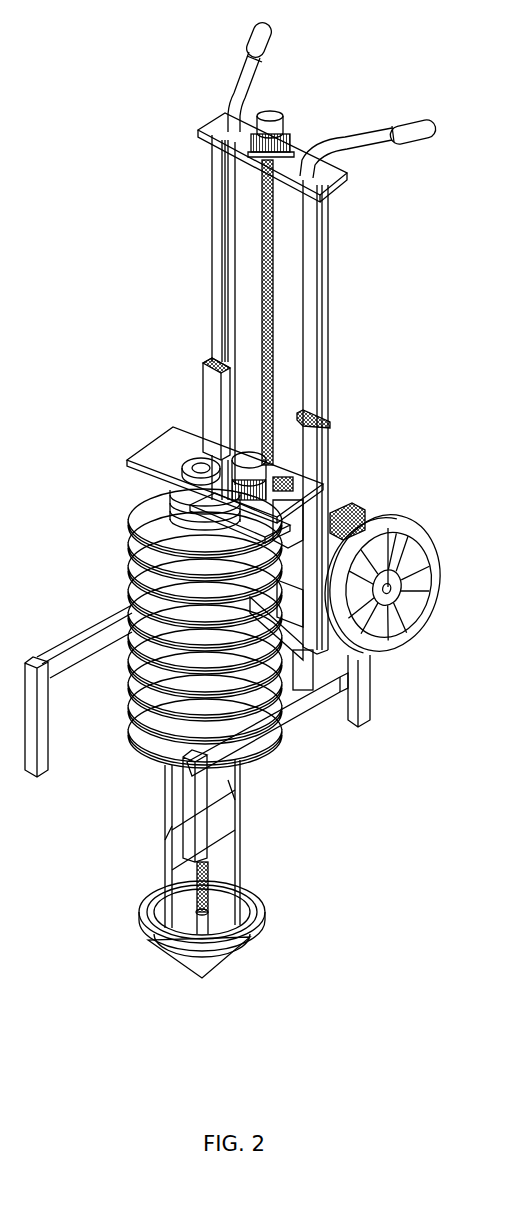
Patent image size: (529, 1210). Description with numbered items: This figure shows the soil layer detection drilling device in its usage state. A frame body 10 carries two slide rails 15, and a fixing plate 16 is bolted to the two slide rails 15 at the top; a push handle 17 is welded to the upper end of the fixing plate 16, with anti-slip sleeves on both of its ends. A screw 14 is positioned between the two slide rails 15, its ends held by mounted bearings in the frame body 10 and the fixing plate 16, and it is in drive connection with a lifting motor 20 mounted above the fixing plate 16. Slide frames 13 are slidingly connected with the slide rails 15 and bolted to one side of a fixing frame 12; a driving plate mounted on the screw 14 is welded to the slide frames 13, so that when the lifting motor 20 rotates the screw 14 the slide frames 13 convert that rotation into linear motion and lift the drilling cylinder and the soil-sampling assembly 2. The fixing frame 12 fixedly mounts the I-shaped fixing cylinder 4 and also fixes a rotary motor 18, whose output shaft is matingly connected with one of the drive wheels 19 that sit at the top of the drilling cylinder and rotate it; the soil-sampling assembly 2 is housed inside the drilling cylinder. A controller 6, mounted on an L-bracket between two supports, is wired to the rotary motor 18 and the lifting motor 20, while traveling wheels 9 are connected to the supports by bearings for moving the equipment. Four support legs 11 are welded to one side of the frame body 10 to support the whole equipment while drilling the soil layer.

The soil-sampling assembly 2 is at (240, 887).
The I-shaped fixing cylinder 4 is at (167, 478).
The controller 6 is at (347, 517).
The traveling wheel 9 is at (373, 653).
The frame body 10 is at (293, 713).
The support leg 11 is at (202, 802).
The fixing frame 12 is at (173, 427).
The slide frame 13 is at (203, 367).
The screw 14 is at (262, 262).
The slide rail 15 is at (213, 187).
The fixing plate 16 is at (203, 130).
The push handle 17 is at (243, 93).
The rotary motor 18 is at (277, 463).
The drive wheel 19 is at (157, 512).
The lifting motor 20 is at (286, 117).